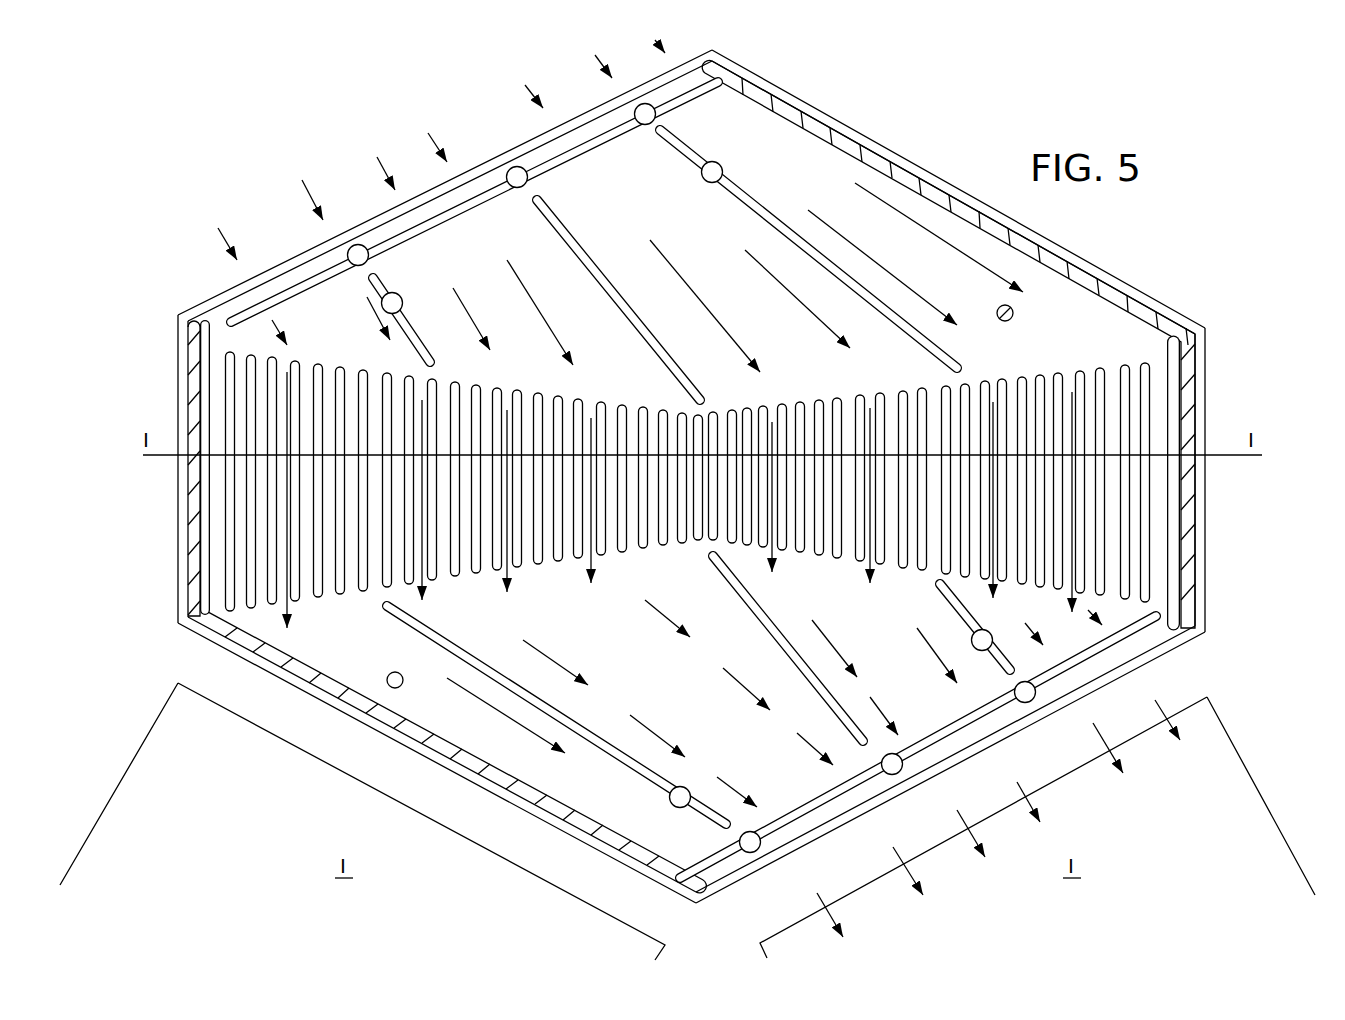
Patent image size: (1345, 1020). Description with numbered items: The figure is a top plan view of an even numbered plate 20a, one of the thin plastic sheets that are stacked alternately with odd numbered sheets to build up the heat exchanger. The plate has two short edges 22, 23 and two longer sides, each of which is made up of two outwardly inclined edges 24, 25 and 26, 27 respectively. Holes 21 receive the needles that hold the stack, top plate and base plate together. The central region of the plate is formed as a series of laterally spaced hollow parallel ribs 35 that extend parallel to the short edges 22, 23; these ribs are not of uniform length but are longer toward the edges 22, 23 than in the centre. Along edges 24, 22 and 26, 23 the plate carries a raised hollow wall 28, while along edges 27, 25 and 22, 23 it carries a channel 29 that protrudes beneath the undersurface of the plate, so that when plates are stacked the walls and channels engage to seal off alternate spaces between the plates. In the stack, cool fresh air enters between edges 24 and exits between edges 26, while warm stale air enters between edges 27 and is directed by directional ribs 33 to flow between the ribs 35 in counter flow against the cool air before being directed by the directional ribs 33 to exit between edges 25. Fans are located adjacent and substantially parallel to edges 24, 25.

The even numbered plate 20a is at (1221, 347).
The holes 21 is at (1014, 307).
The short edge 22 is at (180, 546).
The short edge 23 is at (1210, 546).
The outwardly inclined edge 24 is at (463, 778).
The outwardly inclined edge 25 is at (815, 838).
The outwardly inclined edge 26 is at (866, 134).
The outwardly inclined edge 27 is at (561, 124).
The raised hollow wall 28 is at (1196, 402).
The channel 29 is at (567, 161).
The directional ribs 33 is at (778, 217).
The hollow parallel ribs 35 is at (230, 507).